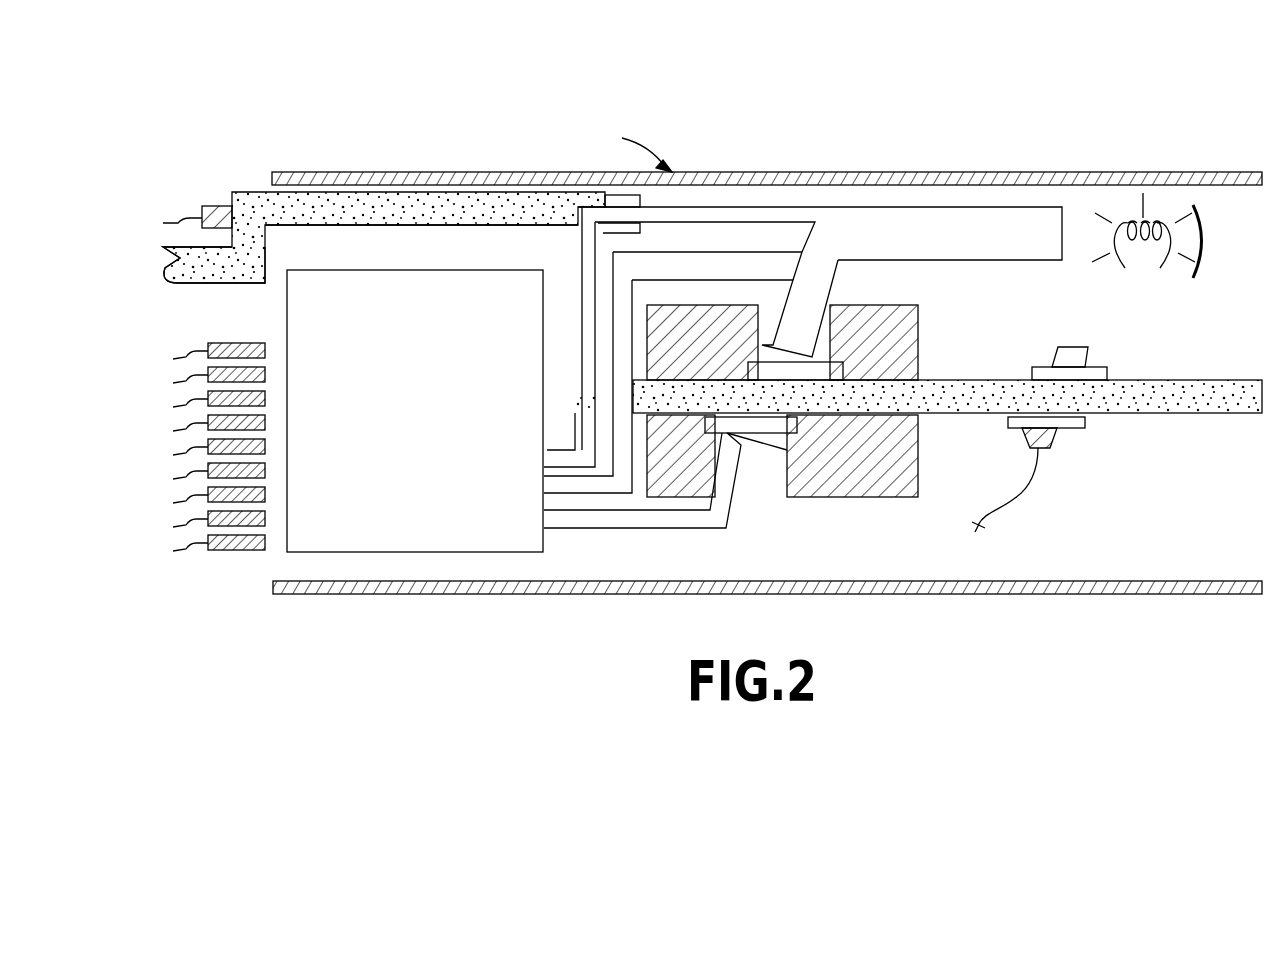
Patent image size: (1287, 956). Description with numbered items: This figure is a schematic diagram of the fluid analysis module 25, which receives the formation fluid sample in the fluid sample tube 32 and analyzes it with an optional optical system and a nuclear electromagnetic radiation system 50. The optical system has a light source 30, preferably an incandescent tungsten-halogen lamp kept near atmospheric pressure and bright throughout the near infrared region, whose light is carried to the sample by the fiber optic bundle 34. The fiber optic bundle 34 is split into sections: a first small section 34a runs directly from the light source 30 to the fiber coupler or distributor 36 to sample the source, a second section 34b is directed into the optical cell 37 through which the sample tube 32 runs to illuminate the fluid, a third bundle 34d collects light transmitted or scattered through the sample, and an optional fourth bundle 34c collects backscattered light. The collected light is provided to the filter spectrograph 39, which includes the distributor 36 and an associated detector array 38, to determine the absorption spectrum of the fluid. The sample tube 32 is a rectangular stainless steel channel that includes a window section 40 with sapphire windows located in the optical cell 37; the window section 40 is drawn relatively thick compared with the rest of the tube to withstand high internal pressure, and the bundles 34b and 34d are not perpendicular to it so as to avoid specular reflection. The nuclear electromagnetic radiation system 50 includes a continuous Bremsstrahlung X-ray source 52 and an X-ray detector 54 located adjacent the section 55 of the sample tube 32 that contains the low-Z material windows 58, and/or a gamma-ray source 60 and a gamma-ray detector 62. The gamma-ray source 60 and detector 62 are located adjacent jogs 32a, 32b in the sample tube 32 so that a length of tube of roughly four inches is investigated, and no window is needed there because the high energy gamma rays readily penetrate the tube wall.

The fluid analysis module 25 is at (1139, 132).
The light source 30 is at (1162, 240).
The fluid sample tube 32 is at (417, 197).
The jog in the sample tube 32a is at (537, 230).
The jog in the sample tube 32b is at (268, 246).
The fiber optic bundle 34 is at (983, 210).
The first section of fiber optic bundle 34a is at (808, 215).
The second section of fiber optic bundle 34b is at (832, 273).
The fourth fiber optic bundle 34c is at (782, 263).
The third fiber optic bundle 34d is at (722, 513).
The fiber coupler or distributor 36 is at (293, 325).
The optical cell 37 is at (920, 332).
The detector array 38 is at (163, 322).
The filter spectrograph 39 is at (255, 592).
The window section 40 is at (840, 372).
The nuclear electromagnetic radiation system 50 is at (1109, 497).
The X-ray source 52 is at (1065, 346).
The X-ray detector 54 is at (1050, 446).
The section with low-Z windows 55 is at (1140, 367).
The low-Z material windows 58 is at (1104, 368).
The gamma-ray source 60 is at (642, 201).
The gamma-ray detector 62 is at (218, 206).